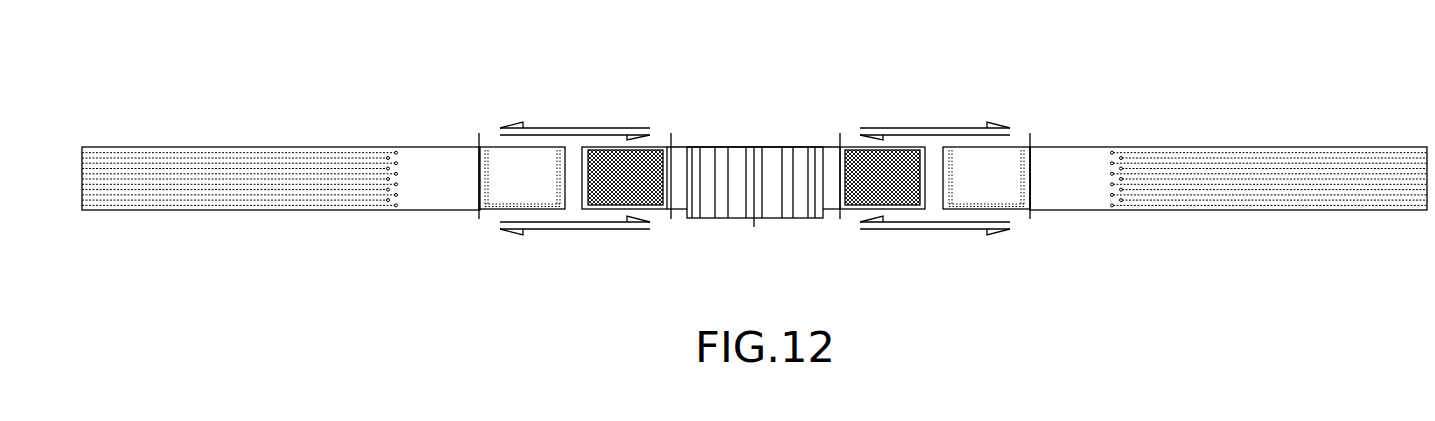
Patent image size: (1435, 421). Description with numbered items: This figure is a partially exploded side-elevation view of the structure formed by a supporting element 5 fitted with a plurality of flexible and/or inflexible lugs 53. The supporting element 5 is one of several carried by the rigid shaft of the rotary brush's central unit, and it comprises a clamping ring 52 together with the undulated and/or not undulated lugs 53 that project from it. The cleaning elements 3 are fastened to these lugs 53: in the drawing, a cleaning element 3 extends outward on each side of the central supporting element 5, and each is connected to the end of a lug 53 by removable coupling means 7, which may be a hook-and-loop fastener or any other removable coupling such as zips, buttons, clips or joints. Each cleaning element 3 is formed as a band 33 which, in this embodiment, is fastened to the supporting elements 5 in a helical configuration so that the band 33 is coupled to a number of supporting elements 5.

The cleaning element 3 is at (280, 142).
The band 33 is at (268, 200).
The removable coupling means 7 is at (512, 187).
The supporting element 5 is at (750, 127).
The clamping ring 52 is at (722, 160).
The lug 53 is at (678, 200).